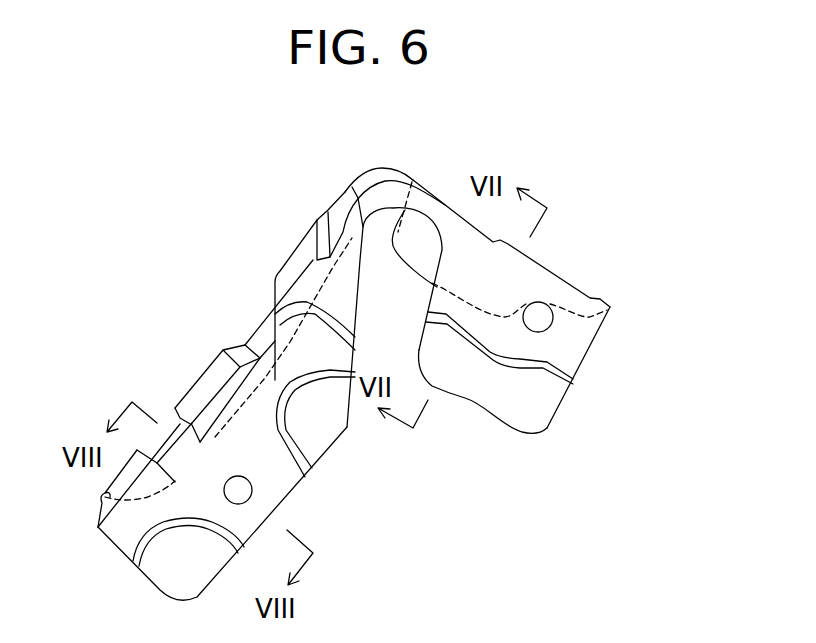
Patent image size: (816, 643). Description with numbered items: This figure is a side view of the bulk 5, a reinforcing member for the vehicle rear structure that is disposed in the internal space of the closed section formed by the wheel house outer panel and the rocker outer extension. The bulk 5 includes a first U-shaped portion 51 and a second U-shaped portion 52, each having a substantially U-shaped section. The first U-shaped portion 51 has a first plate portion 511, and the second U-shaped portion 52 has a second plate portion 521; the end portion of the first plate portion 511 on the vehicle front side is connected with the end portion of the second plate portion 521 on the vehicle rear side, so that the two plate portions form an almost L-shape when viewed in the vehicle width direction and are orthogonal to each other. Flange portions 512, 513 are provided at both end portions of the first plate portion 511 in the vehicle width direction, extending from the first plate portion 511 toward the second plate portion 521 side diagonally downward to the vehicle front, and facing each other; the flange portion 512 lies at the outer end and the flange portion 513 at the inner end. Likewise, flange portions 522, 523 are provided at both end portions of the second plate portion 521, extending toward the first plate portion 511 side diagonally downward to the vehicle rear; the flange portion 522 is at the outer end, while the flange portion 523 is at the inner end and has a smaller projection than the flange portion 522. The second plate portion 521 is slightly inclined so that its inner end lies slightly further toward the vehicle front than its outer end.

The bulk 5 is at (475, 163).
The first U-shaped portion 51 is at (573, 343).
The first plate portion 511 is at (543, 260).
The flange portion 512 is at (540, 407).
The flange portion 513 is at (407, 240).
The second U-shaped portion 52 is at (278, 383).
The second plate portion 521 is at (202, 380).
The flange portion 522 is at (318, 435).
The flange portion 523 is at (263, 463).